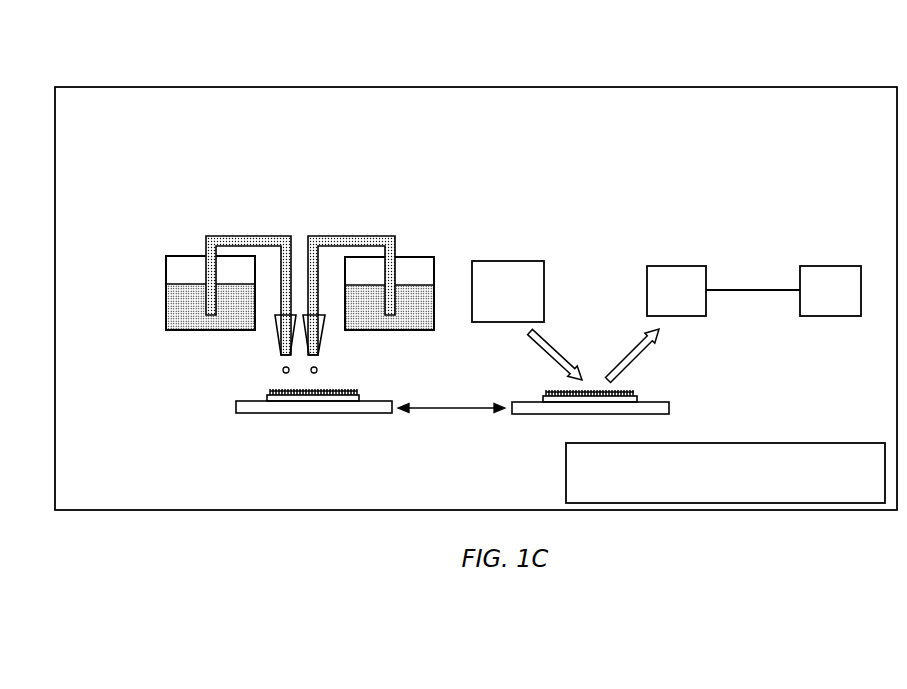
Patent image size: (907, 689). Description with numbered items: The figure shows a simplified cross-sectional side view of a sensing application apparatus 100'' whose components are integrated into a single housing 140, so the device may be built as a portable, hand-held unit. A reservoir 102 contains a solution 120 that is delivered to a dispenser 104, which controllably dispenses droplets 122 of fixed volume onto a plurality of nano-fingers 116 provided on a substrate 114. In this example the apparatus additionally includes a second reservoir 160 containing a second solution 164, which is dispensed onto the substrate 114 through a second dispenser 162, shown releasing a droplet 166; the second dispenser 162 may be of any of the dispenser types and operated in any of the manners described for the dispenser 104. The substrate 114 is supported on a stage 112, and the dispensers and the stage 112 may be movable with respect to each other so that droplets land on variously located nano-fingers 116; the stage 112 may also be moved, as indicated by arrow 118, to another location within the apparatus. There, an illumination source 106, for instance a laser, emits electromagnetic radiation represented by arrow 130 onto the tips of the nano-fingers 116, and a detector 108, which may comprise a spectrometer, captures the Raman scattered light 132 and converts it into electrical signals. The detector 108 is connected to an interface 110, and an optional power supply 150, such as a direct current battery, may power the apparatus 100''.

The housing 140 is at (267, 87).
The sensing application apparatus 100'' is at (488, 121).
The reservoir 102 is at (166, 262).
The solution 120 is at (166, 319).
The dispenser 104 is at (278, 333).
The droplet 122 is at (283, 370).
The second reservoir 160 is at (360, 257).
The second solution 164 is at (420, 318).
The second dispenser 162 is at (322, 335).
The second solution droplet 166 is at (317, 372).
The stage 112 is at (340, 413).
The substrate 114 is at (270, 400).
The nano-fingers 116 is at (258, 391).
The arrow 118 is at (465, 410).
The illumination source 106 is at (492, 261).
The arrow representing electromagnetic radiation 130 is at (555, 348).
The Raman scattered light 132 is at (632, 366).
The detector 108 is at (678, 266).
The interface 110 is at (830, 266).
The power supply 150 is at (725, 473).